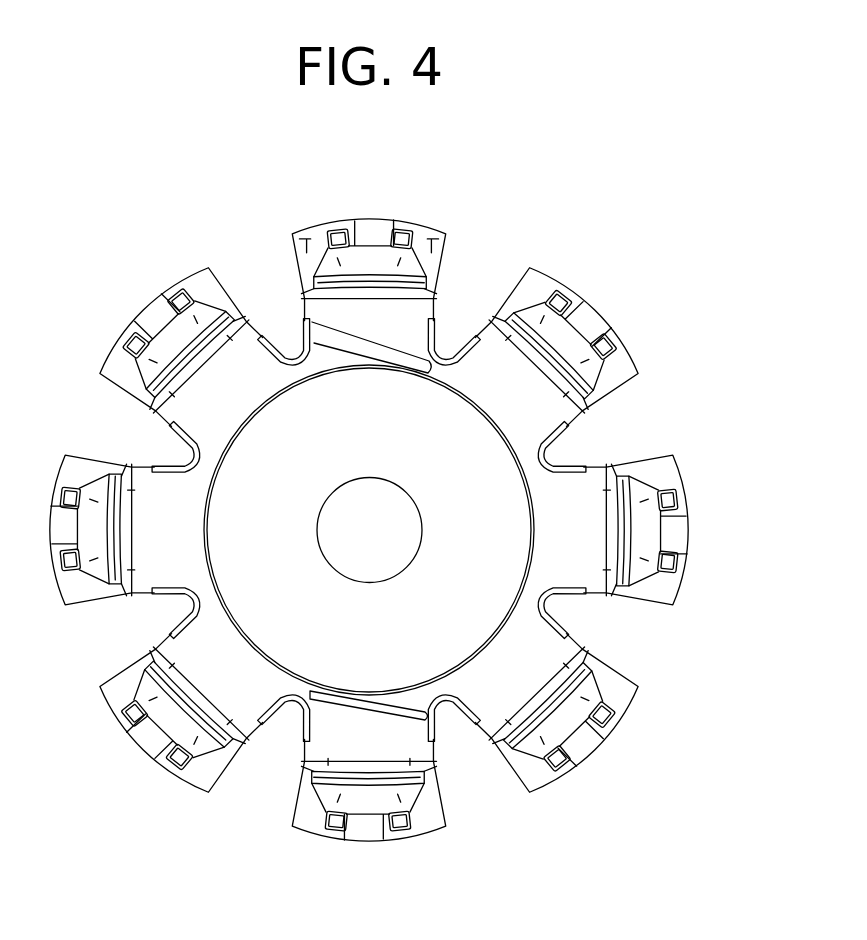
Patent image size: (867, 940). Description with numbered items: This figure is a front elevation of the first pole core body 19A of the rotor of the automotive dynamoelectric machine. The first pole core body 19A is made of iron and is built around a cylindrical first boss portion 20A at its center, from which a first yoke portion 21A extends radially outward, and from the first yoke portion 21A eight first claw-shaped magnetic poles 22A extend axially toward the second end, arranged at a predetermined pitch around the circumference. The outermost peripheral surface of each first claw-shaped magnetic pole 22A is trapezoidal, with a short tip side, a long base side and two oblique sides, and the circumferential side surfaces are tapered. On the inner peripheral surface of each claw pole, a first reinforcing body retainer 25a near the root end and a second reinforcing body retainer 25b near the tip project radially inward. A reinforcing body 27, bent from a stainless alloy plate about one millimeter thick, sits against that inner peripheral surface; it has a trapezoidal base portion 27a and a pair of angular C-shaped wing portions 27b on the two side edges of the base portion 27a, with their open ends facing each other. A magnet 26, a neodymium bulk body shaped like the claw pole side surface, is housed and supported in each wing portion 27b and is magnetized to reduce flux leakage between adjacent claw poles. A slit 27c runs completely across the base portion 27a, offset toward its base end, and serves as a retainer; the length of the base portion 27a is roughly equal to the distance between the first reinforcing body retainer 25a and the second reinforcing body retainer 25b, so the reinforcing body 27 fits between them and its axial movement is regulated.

The first pole core body 19A is at (185, 197).
The first boss portion 20A is at (500, 580).
The first yoke portion 21A is at (502, 657).
The first claw-shaped magnetic poles 22A is at (590, 747).
The first reinforcing body retainer 25a is at (165, 727).
The second reinforcing body retainer 25b is at (253, 740).
The magnet 26 is at (607, 335).
The reinforcing body 27 is at (315, 823).
The base portion 27a is at (375, 798).
The wing portions 27b is at (430, 812).
The slit 27c is at (432, 778).